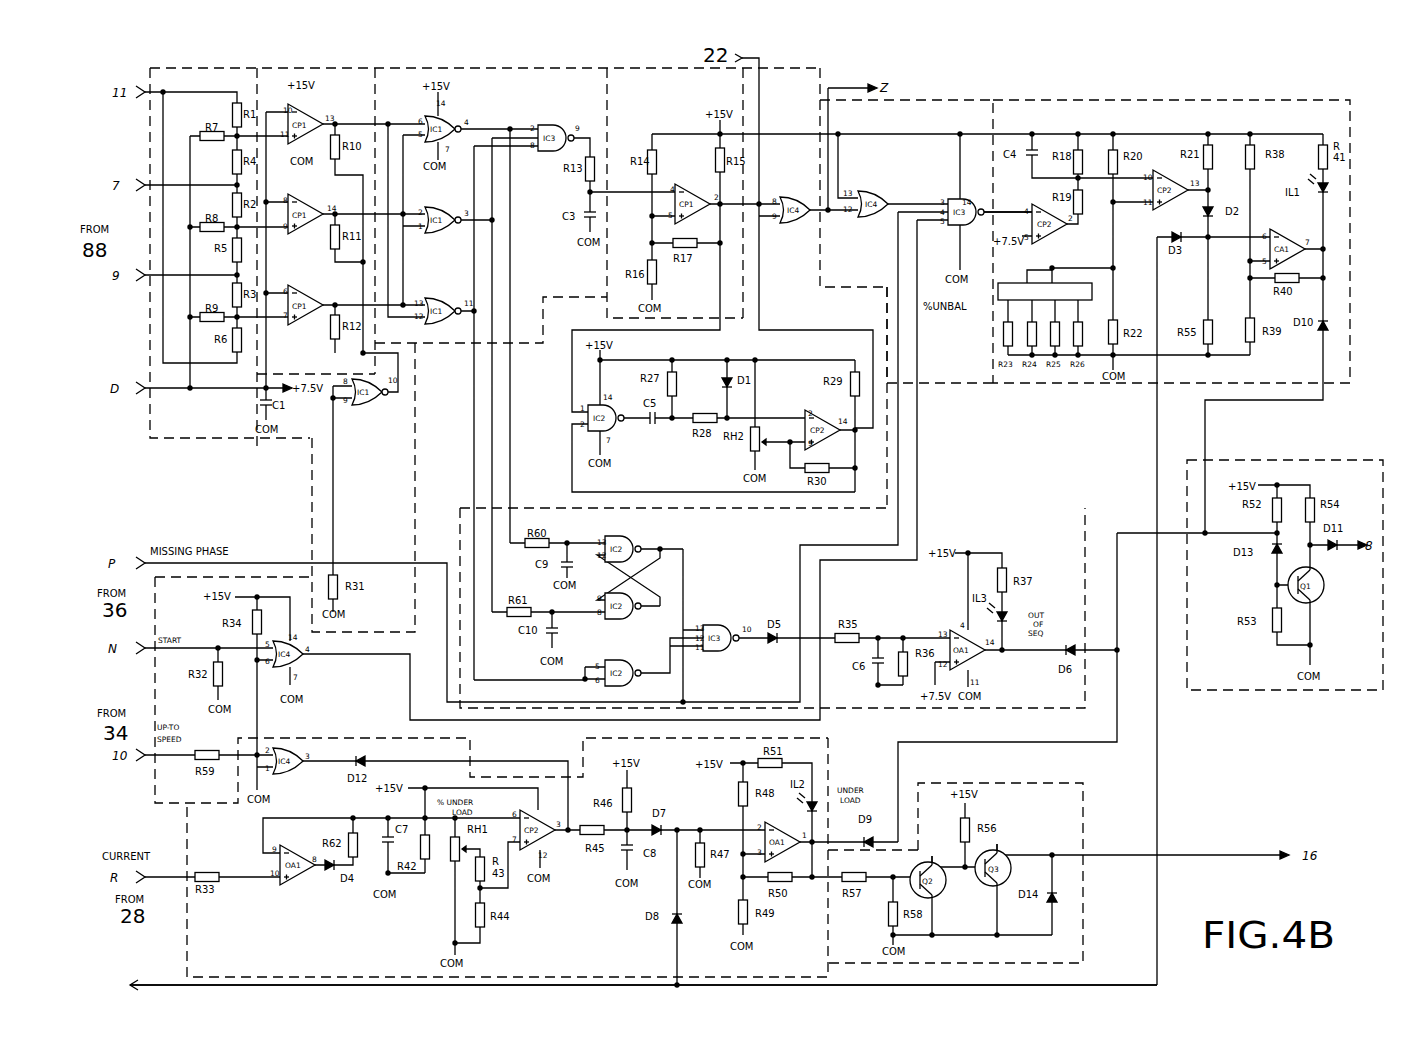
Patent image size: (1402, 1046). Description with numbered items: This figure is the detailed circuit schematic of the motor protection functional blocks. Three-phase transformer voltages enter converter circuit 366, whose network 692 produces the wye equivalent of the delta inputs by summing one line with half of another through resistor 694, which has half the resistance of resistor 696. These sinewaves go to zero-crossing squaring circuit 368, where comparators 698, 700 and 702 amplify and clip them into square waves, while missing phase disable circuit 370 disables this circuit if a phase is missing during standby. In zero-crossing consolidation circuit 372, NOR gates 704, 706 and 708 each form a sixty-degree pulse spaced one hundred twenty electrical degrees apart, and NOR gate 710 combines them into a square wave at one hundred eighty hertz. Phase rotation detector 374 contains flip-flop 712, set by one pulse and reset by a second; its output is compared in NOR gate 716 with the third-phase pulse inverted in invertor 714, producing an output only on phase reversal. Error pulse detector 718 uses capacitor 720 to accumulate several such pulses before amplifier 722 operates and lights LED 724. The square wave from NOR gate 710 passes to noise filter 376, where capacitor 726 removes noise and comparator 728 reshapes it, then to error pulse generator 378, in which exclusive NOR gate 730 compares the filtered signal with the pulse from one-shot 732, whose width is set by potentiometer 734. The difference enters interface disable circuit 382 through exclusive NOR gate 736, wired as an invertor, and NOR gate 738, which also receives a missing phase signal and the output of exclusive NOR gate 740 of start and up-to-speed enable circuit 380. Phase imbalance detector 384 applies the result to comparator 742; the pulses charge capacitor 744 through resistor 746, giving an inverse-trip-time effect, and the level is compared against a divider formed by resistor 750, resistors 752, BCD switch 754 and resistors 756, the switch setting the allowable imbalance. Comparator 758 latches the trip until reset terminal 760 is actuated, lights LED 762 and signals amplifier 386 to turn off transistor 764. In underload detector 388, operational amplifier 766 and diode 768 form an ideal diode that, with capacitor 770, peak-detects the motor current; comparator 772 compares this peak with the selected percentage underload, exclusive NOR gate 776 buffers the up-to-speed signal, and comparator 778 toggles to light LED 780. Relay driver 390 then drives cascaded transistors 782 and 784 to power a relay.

The converter circuit 366 is at (485, 258).
The zero-crossing squaring circuit 368 is at (304, 221).
The missing phase disable circuit 370 is at (417, 492).
The zero-crossing consolidation circuit 372 is at (547, 236).
The phase rotation detector 374 is at (990, 505).
The noise filter 376 is at (696, 193).
The error pulse generator 378 is at (827, 177).
The start and up-to-speed enable circuit 380 is at (153, 621).
The interface disable circuit 382 is at (906, 241).
The phase imbalance detector 384 is at (1171, 241).
The amplifier 386 is at (1273, 460).
The underload detector 388 is at (498, 762).
The relay driver 390 is at (1043, 781).
The network 692 is at (217, 200).
The resistor 694 is at (208, 112).
The resistor 696 is at (217, 161).
The comparator 698 is at (313, 116).
The comparator 700 is at (297, 203).
The comparator 702 is at (297, 285).
The NOR gate 704 is at (462, 120).
The NOR gate 706 is at (447, 200).
The NOR gate 708 is at (439, 297).
The NOR gate 710 is at (555, 126).
The flip-flop 712 is at (648, 537).
The invertor 714 is at (618, 659).
The NOR gate 716 is at (717, 624).
The error pulse detector 718 is at (886, 632).
The capacitor 720 is at (855, 680).
The amplifier 722 is at (985, 658).
The LED 724 is at (1023, 604).
The capacitor 726 is at (650, 217).
The comparator 728 is at (687, 176).
The exclusive NOR gate 730 is at (800, 195).
The one-shot 732 is at (660, 397).
The potentiometer 734 is at (771, 422).
The exclusive NOR gate 736 is at (870, 181).
The NOR gate 738 is at (957, 197).
The exclusive NOR gate 740 is at (1184, 199).
The comparator 742 is at (1067, 230).
The capacitor 744 is at (440, 883).
The resistor 746 is at (1093, 207).
The resistor 750 is at (1122, 157).
The resistors 752 is at (1117, 320).
The BCD switch 754 is at (1015, 283).
The resistors 756 is at (1070, 389).
The comparator 758 is at (1279, 233).
The reset terminal 760 is at (140, 970).
The LED 762 is at (1313, 178).
The transistor 764 is at (1321, 603).
The operational amplifier 766 is at (287, 887).
The diode 768 is at (328, 873).
The capacitor 770 is at (380, 822).
The comparator 772 is at (550, 841).
The exclusive NOR gate 776 is at (305, 746).
The comparator 778 is at (803, 853).
The LED 780 is at (817, 784).
The transistor 782 is at (946, 891).
The transistor 784 is at (1016, 889).